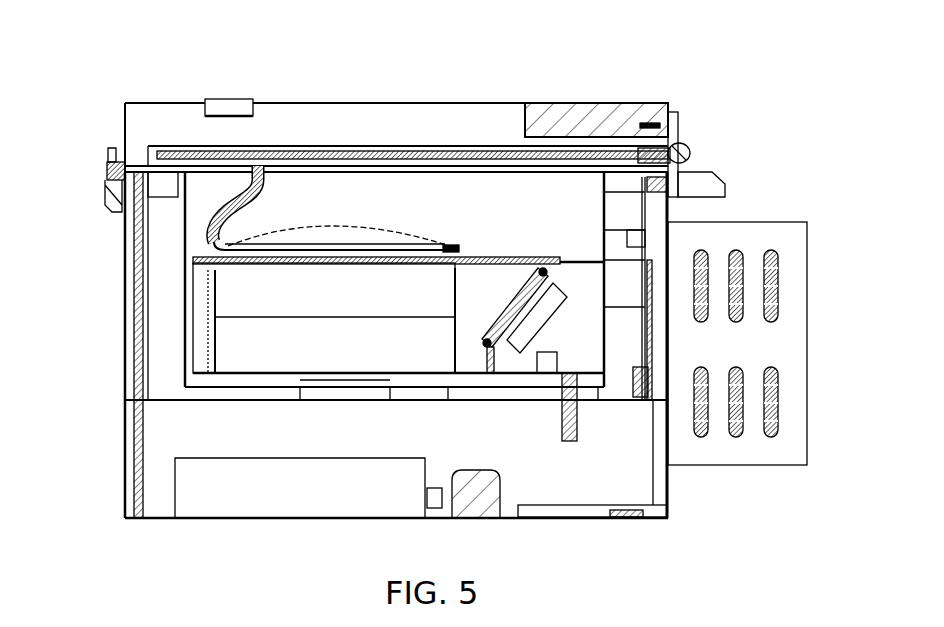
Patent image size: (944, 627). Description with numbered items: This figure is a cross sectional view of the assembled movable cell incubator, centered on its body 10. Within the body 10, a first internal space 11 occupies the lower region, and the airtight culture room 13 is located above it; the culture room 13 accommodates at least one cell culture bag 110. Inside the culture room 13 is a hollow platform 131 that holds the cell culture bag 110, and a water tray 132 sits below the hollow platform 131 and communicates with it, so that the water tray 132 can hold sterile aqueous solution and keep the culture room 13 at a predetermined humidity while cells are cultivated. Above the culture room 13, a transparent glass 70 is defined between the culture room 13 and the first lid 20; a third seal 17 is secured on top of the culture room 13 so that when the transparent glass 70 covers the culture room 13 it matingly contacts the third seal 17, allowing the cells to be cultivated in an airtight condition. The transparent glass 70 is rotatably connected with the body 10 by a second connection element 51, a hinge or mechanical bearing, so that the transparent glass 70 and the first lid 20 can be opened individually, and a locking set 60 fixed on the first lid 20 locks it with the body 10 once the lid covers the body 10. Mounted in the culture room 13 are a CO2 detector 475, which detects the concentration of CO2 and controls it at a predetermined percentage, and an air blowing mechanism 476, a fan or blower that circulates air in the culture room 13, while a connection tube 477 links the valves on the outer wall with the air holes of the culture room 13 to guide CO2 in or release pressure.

The body 10 is at (118, 298).
The first internal space 11 is at (165, 446).
The culture room 13 is at (212, 195).
The third seal 17 is at (618, 168).
The first lid 20 is at (289, 95).
The second connection element 51 is at (690, 154).
The locking set 60 is at (95, 187).
The transparent glass 70 is at (380, 152).
The cell culture bag 110 is at (412, 222).
The hollow platform 131 is at (515, 256).
The water tray 132 is at (215, 352).
The CO2 detector 475 is at (545, 382).
The air blowing mechanism 476 is at (503, 355).
The connection tube 477 is at (645, 318).